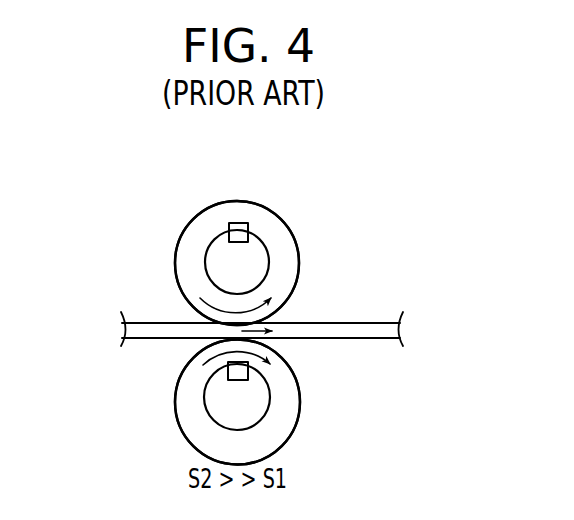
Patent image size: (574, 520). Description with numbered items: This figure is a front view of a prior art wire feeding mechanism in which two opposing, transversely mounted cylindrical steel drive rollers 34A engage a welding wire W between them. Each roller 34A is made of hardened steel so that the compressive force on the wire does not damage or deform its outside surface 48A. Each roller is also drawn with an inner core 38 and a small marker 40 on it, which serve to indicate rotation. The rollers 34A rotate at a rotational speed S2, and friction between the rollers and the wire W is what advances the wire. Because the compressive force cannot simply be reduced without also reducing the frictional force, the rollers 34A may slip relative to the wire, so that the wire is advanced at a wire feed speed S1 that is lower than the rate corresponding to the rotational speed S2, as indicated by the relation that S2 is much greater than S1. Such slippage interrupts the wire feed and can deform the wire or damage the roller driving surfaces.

The prior art drive roller 34A is at (290, 225).
The outside surface 48A is at (254, 202).
The roller core 38 is at (222, 260).
The marker element on roller 40 is at (232, 224).
The welding wire W is at (375, 323).
The wire feed speed S1 is at (289, 322).
The rotational speed S2 is at (205, 305).